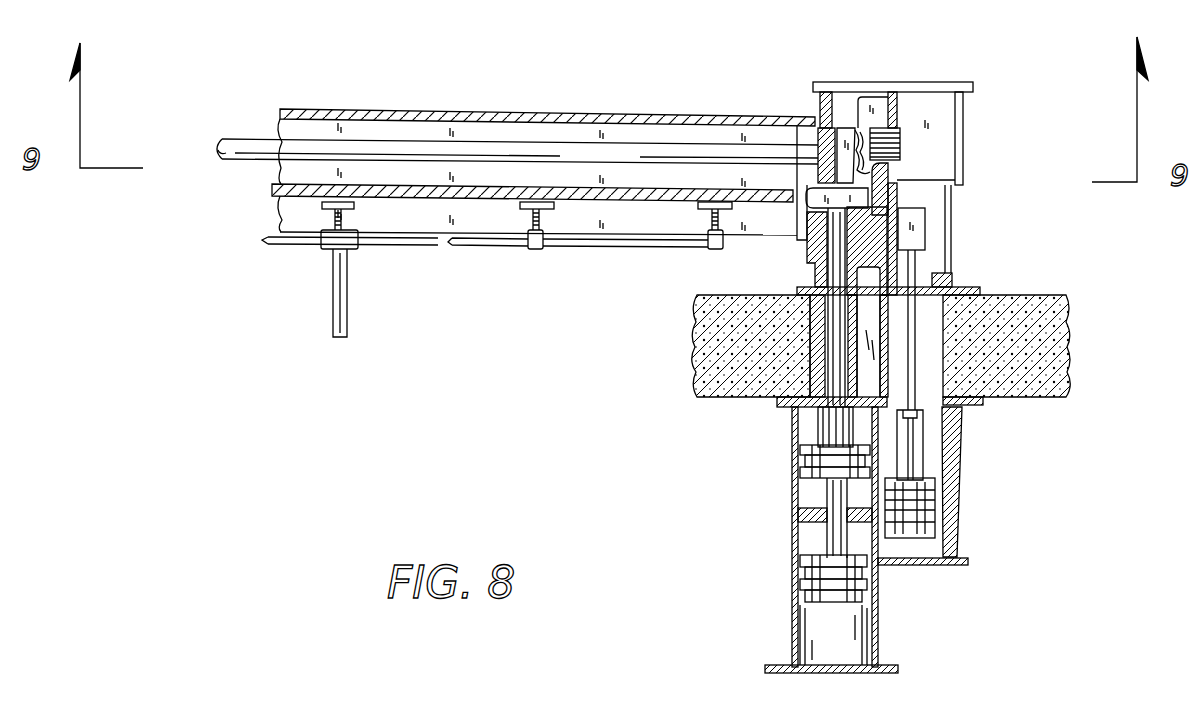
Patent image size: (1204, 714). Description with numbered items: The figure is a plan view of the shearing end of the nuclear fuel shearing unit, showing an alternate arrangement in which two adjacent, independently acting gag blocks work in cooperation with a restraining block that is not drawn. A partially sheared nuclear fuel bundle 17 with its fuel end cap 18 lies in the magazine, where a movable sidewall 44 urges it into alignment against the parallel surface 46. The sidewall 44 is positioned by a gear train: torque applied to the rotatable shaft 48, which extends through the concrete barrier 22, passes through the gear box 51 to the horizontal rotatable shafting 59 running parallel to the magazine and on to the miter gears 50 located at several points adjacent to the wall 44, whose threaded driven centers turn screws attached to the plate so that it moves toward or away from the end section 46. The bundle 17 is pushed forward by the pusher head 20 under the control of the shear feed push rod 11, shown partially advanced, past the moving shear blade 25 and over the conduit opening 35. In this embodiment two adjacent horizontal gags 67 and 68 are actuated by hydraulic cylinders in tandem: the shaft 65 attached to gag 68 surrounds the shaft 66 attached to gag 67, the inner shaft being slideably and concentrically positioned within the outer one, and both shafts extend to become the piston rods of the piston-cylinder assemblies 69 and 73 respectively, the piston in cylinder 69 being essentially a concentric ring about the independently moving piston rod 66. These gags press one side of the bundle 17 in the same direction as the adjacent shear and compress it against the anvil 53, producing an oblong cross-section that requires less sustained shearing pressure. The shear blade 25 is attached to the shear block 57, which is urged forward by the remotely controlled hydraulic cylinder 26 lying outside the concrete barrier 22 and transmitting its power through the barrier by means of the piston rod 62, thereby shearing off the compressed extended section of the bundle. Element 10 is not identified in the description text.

The table board 10 is at (400, 130).
The shear feed push rod 11 is at (251, 139).
The movable sidewall 44 is at (272, 190).
The parallel surface 46 is at (614, 113).
The rotatable shaft 48 is at (333, 325).
The miter gears 50 is at (538, 250).
The gear box 51 is at (325, 250).
The horizontal rotatable shafting 59 is at (268, 245).
The fuel end cap 18 is at (840, 133).
The pusher head 20 is at (817, 134).
The anvil 53 is at (885, 100).
The conduit opening 35 is at (940, 115).
The nuclear fuel bundle 17 is at (900, 140).
The horizontal gag 68 is at (877, 178).
The shear blade 25 is at (897, 198).
The shear block 57 is at (925, 223).
The horizontal gag 67 is at (812, 200).
The shaft 66 is at (828, 250).
The concrete barrier 22 is at (700, 400).
The piston rod 62 is at (915, 340).
The shaft 65 is at (815, 432).
The piston-cylinder assembly 69 is at (812, 497).
The hydraulic cylinder 26 is at (913, 548).
The piston-cylinder assembly 73 is at (835, 627).